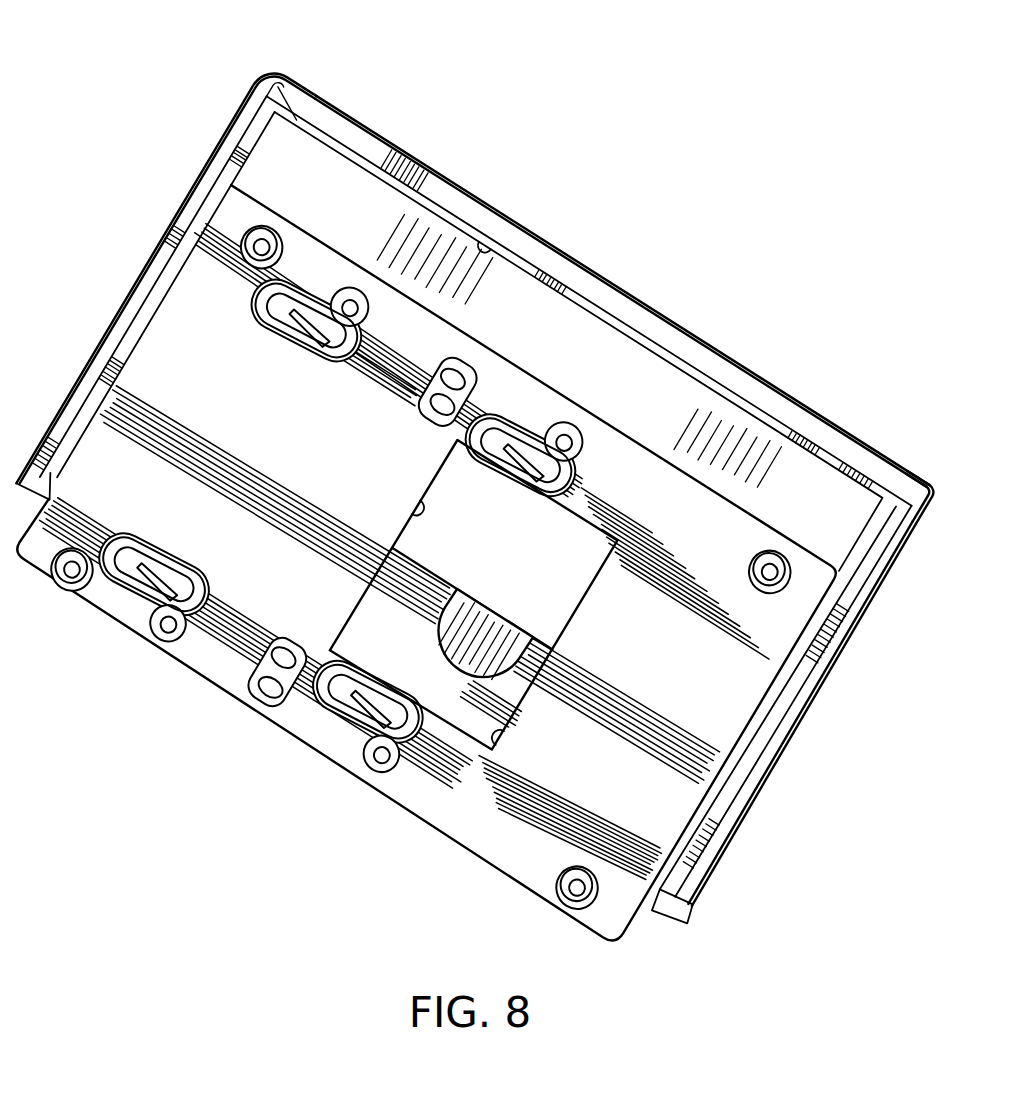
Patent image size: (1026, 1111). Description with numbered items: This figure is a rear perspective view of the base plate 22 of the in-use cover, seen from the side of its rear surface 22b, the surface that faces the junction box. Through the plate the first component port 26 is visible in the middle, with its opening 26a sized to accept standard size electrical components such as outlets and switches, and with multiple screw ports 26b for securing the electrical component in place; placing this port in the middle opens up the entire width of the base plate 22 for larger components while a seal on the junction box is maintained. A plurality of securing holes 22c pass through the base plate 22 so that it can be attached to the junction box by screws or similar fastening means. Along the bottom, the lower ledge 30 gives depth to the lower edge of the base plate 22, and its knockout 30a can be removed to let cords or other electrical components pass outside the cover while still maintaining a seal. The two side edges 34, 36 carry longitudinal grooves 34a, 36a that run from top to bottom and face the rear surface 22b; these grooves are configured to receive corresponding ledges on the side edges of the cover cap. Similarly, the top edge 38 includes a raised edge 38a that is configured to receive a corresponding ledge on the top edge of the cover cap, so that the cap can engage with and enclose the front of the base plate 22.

The base plate 22 is at (634, 191).
The rear surface 22b is at (684, 654).
The securing holes 22c is at (750, 576).
The first component port 26 is at (493, 740).
The opening 26a is at (410, 523).
The screw ports 26b is at (372, 770).
The lower ledge 30 is at (441, 581).
The knockout 30a is at (505, 640).
The side edge 34 is at (790, 736).
The longitudinal groove 34a is at (920, 483).
The side edge 36 is at (212, 178).
The longitudinal groove 36a is at (288, 80).
The top edge 38 is at (637, 301).
The raised edge 38a is at (486, 240).